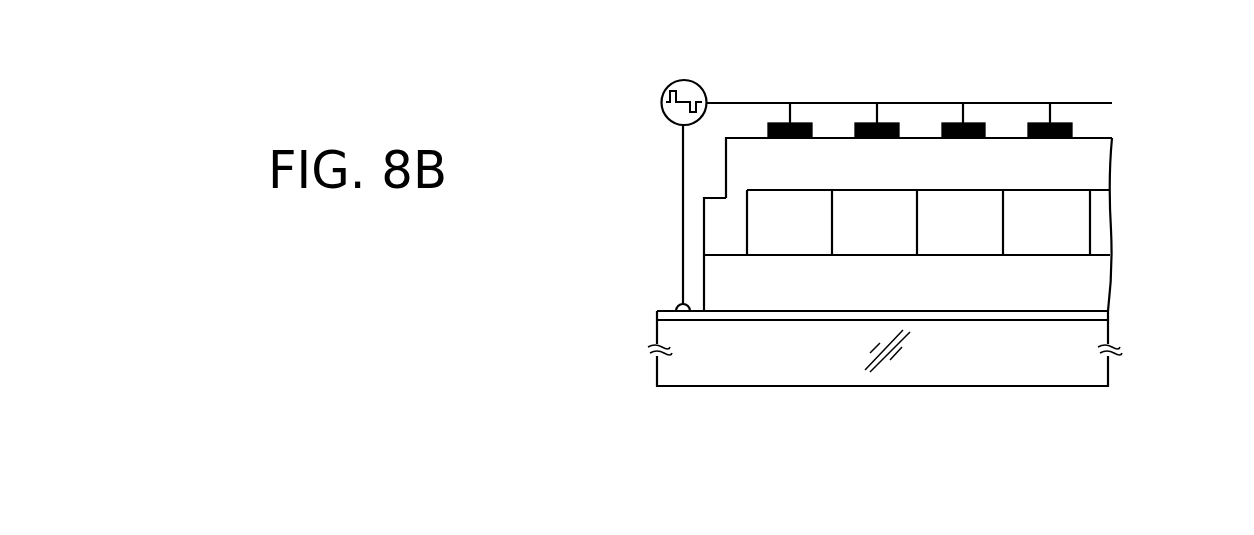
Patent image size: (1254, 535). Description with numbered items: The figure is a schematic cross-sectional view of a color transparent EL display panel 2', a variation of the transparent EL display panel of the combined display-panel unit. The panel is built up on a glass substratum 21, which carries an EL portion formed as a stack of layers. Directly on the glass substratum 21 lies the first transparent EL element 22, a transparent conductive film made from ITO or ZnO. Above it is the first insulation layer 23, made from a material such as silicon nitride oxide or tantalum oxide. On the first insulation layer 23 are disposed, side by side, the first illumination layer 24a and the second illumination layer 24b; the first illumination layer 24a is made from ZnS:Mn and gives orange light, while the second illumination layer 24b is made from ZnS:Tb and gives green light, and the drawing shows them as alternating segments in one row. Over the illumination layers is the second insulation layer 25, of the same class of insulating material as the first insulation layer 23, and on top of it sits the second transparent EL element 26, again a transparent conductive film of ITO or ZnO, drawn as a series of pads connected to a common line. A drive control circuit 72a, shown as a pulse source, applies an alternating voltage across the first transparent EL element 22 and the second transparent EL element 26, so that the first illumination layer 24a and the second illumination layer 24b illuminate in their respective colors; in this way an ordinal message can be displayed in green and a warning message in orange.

The color transparent EL display panel 2' is at (1092, 76).
The drive control circuit 72a is at (703, 86).
The second transparent EL element 26 is at (1074, 135).
The second insulation layer 25 is at (1100, 166).
The second illumination layer 24b is at (846, 203).
The first illumination layer 24a is at (770, 230).
The first insulation layer 23 is at (1094, 282).
The first transparent EL element 22 is at (1108, 313).
The glass substratum 21 is at (1094, 342).